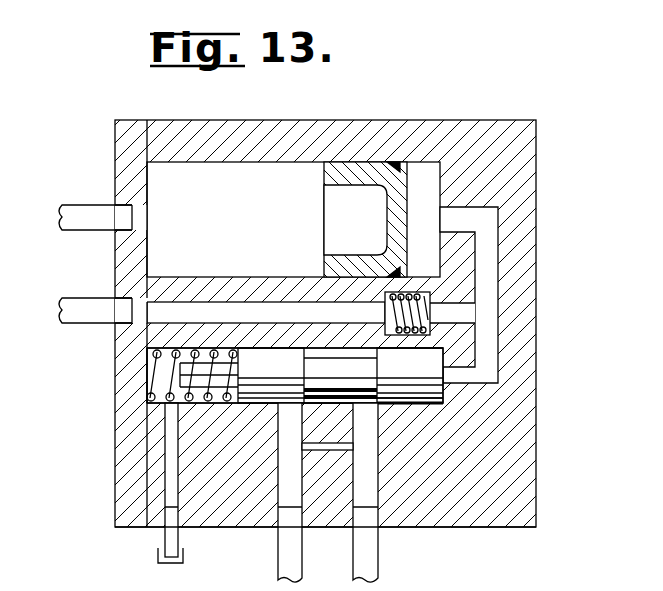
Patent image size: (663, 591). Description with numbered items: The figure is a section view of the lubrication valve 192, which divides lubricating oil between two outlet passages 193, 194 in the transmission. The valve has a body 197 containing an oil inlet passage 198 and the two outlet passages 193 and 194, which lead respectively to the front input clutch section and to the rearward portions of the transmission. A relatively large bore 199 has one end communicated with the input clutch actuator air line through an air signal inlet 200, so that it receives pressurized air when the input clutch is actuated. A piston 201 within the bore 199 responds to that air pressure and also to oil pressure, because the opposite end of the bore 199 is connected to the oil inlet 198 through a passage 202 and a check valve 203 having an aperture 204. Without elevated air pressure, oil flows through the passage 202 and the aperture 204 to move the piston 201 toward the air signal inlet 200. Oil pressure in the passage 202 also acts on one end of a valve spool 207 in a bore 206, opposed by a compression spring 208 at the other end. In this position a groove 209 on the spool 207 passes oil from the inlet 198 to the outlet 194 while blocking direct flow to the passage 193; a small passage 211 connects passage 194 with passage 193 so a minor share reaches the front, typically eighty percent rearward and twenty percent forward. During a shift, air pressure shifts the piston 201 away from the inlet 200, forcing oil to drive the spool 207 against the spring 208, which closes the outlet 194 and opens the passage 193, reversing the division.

The lubrication valve 192 is at (489, 104).
The flow path (outlet passage) 193 is at (283, 500).
The flow path (outlet passage) 194 is at (370, 500).
The body 197 is at (536, 412).
The oil inlet passage 198 is at (132, 306).
The bore 199 is at (228, 168).
The air signal inlet 200 is at (132, 216).
The piston 201 is at (337, 180).
The passage 202 is at (493, 255).
The check valve 203 is at (446, 356).
The aperture 204 is at (430, 318).
The bore 206 is at (413, 405).
The valve spool 207 is at (433, 400).
The compression spring 208 is at (152, 392).
The groove 209 is at (333, 355).
The passage 211 is at (300, 447).